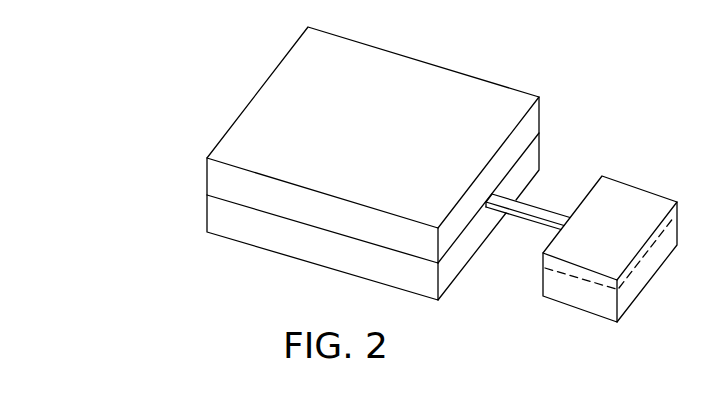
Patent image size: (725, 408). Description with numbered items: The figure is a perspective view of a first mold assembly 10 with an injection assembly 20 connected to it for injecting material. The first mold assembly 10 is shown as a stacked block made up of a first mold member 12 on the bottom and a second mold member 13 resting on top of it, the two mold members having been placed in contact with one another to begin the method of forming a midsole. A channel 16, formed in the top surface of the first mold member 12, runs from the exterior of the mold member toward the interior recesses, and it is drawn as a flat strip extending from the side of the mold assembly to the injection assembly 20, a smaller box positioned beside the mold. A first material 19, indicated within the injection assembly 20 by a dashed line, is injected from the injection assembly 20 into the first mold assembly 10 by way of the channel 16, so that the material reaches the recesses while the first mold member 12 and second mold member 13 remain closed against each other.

The first mold assembly 10 is at (442, 174).
The first mold member 12 is at (323, 253).
The second mold member 13 is at (382, 143).
The channel 16 is at (495, 208).
The first material 19 is at (592, 299).
The injection assembly 20 is at (625, 237).